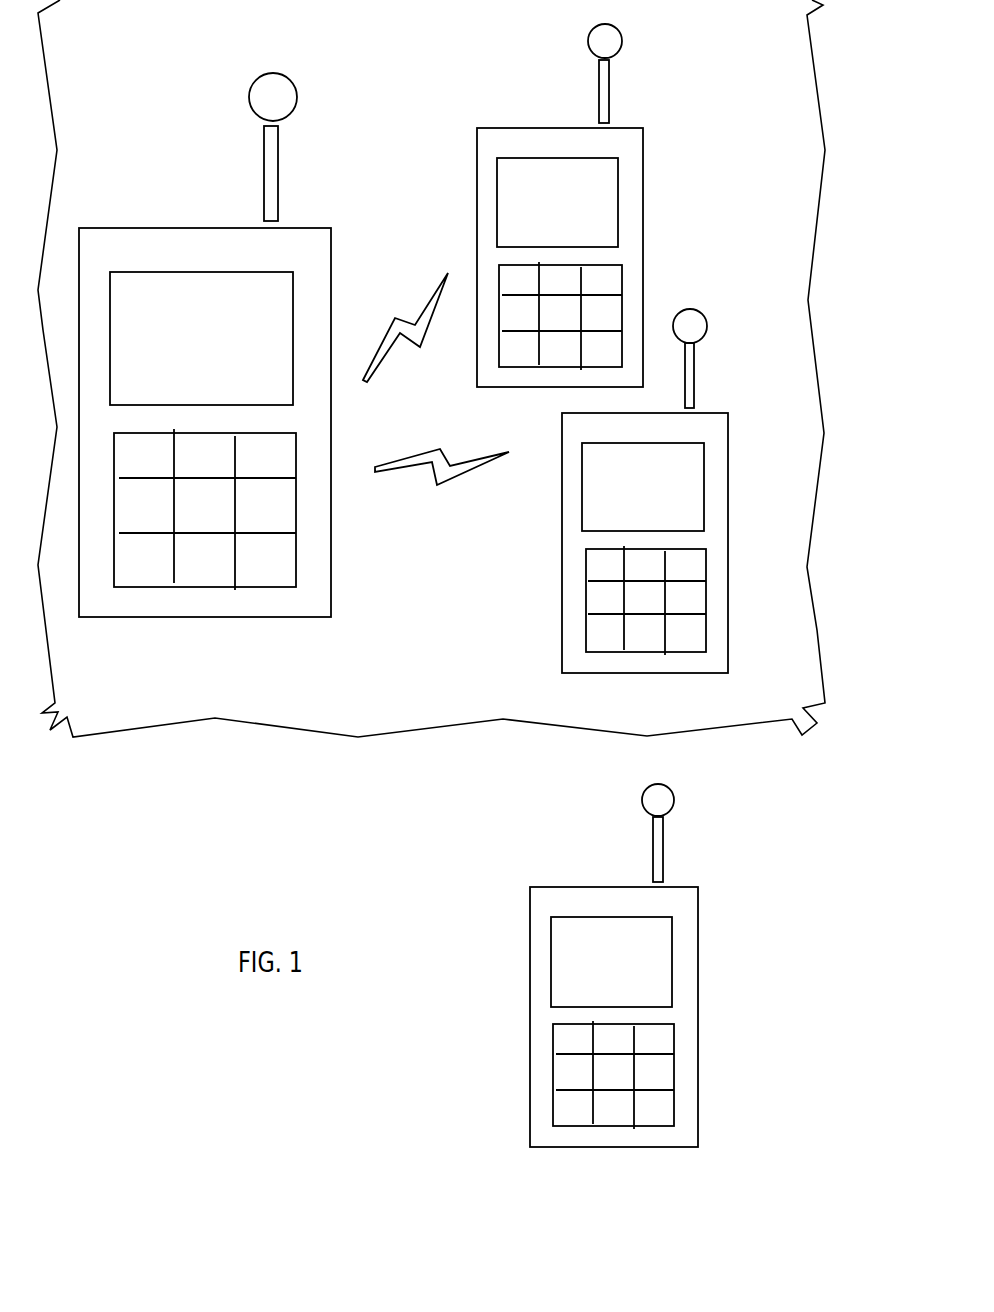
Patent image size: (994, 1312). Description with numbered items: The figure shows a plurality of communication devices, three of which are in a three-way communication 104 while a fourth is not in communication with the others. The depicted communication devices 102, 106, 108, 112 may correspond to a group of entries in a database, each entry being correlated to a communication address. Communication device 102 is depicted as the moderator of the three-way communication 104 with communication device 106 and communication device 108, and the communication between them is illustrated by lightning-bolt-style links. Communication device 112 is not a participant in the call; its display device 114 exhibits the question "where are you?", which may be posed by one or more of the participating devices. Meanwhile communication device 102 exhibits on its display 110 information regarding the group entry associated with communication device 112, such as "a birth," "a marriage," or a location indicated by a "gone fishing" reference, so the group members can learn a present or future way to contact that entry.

The communication device 102 is at (216, 345).
The three-way communication 104 is at (813, 332).
The communication device 106 is at (646, 132).
The communication device 108 is at (729, 412).
The display 110 is at (293, 272).
The communication device 112 is at (638, 965).
The display device 114 is at (673, 952).